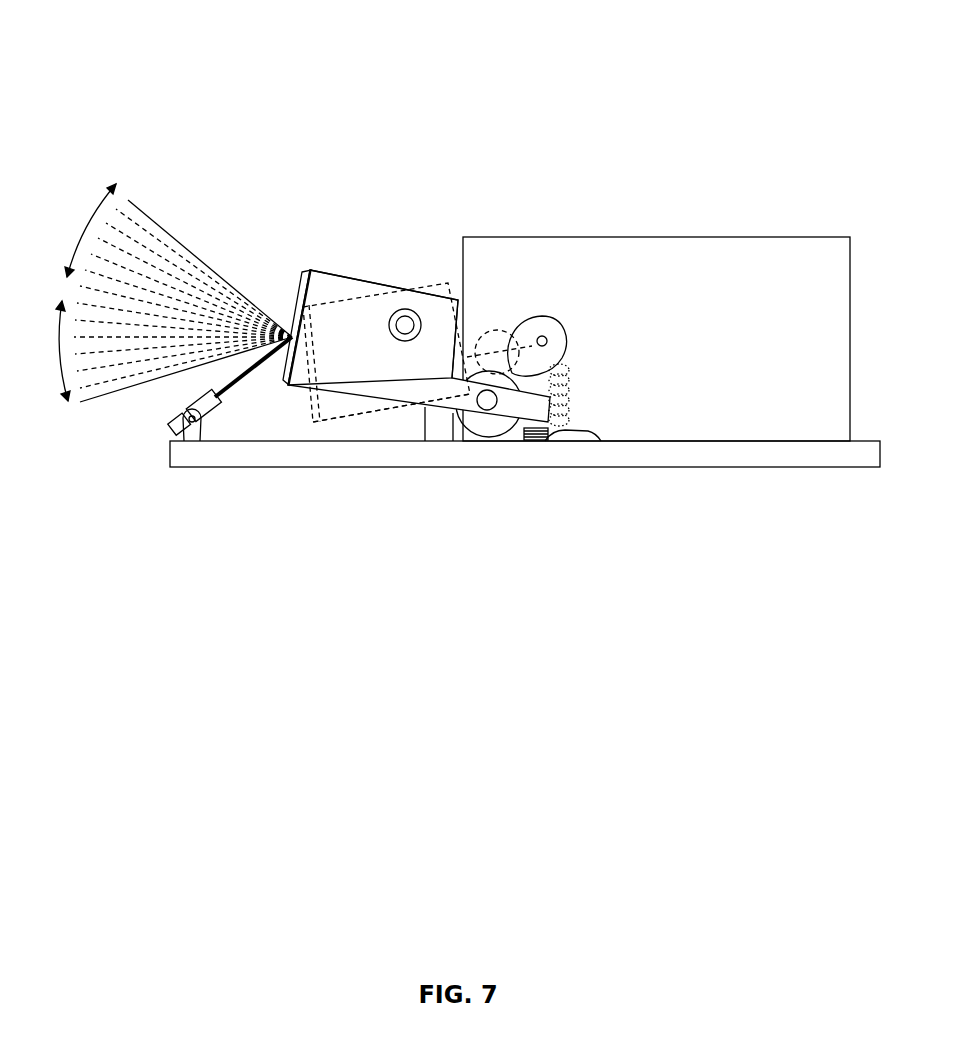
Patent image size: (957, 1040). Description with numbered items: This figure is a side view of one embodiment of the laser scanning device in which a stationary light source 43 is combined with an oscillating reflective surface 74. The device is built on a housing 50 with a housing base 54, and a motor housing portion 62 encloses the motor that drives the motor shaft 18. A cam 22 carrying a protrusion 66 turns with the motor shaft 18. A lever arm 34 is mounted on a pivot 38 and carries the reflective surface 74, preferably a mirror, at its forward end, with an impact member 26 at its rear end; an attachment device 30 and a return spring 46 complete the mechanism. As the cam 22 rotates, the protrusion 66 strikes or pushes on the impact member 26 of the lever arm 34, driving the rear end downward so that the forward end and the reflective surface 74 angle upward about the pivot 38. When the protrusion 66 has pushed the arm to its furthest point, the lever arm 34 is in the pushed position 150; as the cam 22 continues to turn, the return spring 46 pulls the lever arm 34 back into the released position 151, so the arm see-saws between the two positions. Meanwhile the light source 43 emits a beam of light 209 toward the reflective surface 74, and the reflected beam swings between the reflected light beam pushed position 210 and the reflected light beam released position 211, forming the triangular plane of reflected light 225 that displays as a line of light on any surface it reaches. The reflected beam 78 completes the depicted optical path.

The motor shaft 18 is at (547, 340).
The cam 22 is at (567, 353).
The impact member 26 is at (483, 427).
The attachment device 30 is at (490, 408).
The lever arm 34 is at (335, 282).
The pivot 38 is at (405, 310).
The light source 43 is at (172, 416).
The return spring 46 is at (598, 438).
The housing 50 is at (435, 430).
The housing base 54 is at (293, 453).
The motor housing portion 62 is at (780, 258).
The protrusion 66 is at (512, 348).
The reflective surface 74 is at (297, 297).
The light beam 78 is at (240, 282).
The pushed position 150 is at (372, 285).
The released position 151 is at (323, 420).
The beam of light 209 is at (240, 381).
The reflected light beam pushed position 210 is at (165, 227).
The reflected light beam released position 211 is at (115, 392).
The triangular plane of reflected light 225 is at (157, 297).